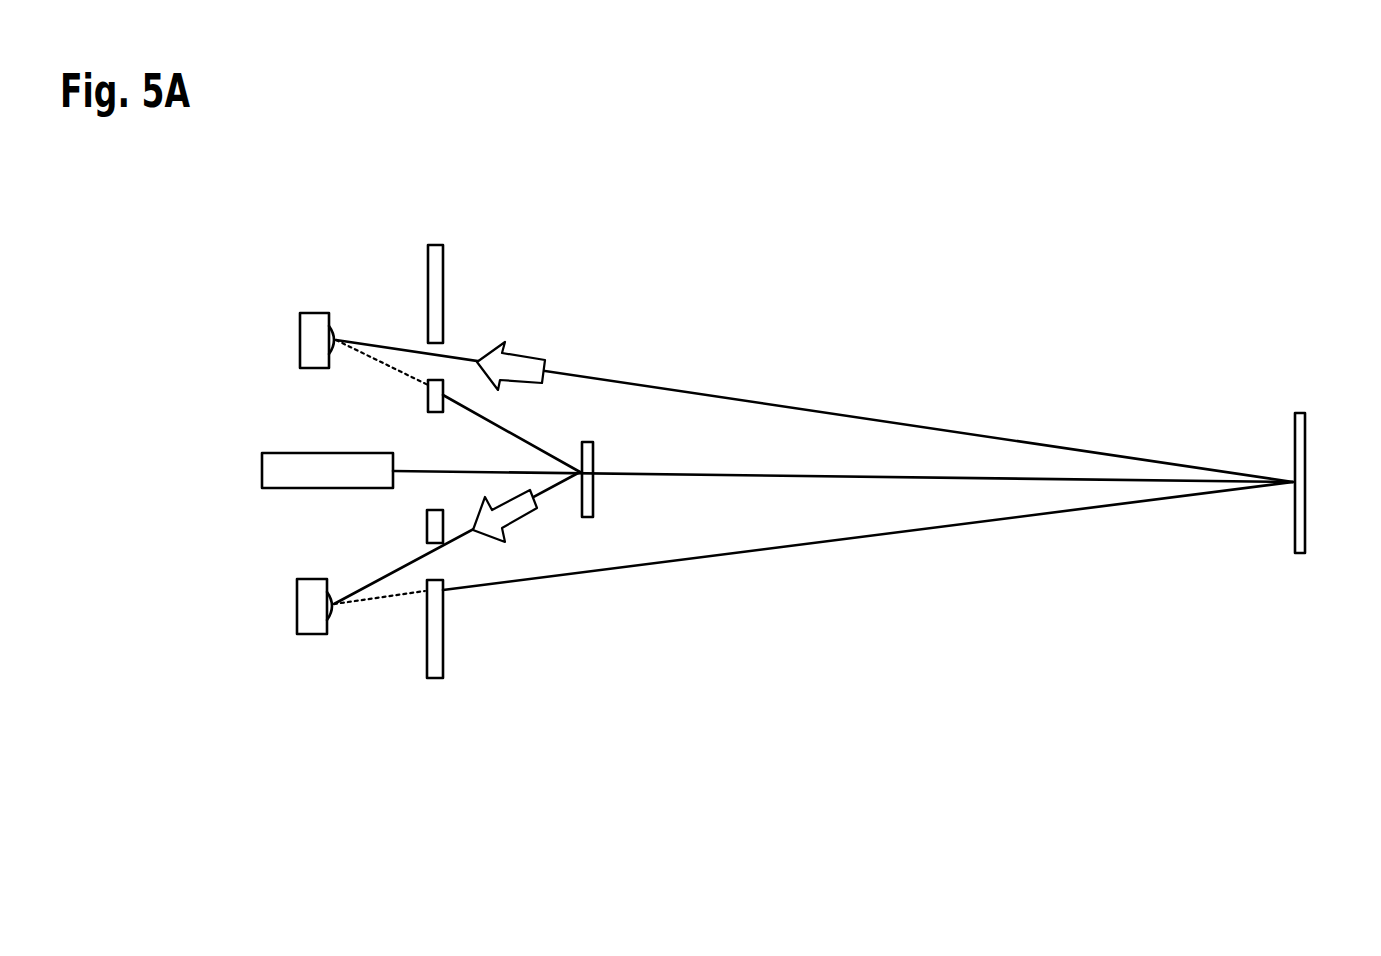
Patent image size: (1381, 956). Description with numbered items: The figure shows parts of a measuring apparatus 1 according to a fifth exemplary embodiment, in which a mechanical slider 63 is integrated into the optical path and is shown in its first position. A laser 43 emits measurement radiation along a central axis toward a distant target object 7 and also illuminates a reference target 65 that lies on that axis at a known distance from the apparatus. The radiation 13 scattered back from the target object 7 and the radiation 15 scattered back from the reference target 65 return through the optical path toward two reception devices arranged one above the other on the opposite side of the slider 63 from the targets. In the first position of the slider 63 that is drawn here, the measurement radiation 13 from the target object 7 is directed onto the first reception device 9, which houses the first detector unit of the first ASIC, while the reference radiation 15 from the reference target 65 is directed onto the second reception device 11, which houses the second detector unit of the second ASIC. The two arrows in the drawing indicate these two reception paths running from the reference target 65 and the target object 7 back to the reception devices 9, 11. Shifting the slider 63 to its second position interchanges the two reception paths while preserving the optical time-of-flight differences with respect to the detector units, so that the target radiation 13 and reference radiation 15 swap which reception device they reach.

The measuring apparatus 1 is at (155, 609).
The target object 7 is at (1305, 445).
The first reception device 9 is at (310, 346).
The second reception device 11 is at (307, 612).
The measurement radiation 13 is at (522, 358).
The reference radiation 15 is at (520, 507).
The laser 43 is at (270, 472).
The mechanical slider 63 is at (437, 290).
The reference target 65 is at (595, 455).